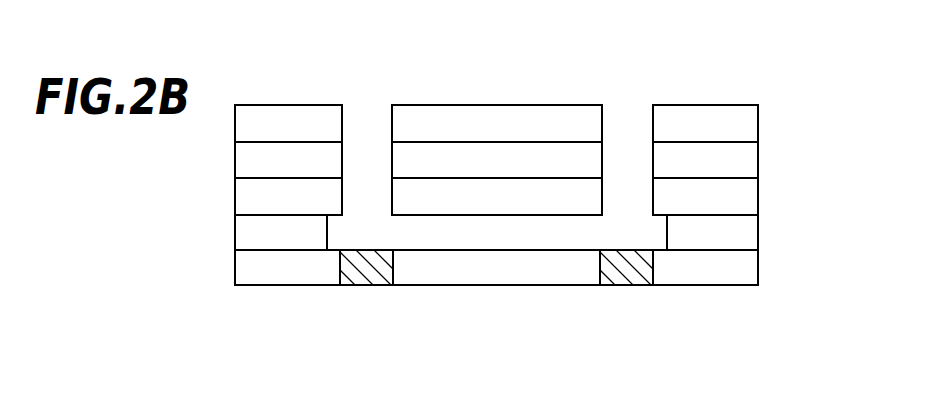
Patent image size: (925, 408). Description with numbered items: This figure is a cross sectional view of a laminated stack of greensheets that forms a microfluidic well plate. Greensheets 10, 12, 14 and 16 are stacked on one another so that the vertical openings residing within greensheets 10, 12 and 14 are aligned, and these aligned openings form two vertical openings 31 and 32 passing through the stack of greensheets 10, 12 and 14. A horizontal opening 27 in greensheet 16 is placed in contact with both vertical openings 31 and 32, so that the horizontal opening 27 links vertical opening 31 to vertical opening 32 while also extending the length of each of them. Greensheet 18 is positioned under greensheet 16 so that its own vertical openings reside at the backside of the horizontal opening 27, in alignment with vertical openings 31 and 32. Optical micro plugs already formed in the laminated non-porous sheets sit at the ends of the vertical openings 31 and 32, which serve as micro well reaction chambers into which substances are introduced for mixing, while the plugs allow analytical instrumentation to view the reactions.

The greensheet 10 is at (748, 124).
The greensheet 12 is at (748, 160).
The greensheet 14 is at (748, 197).
The greensheet 16 is at (748, 240).
The greensheet 18 is at (748, 275).
The horizontal opening 27 is at (497, 232).
The vertical opening 31 is at (370, 118).
The vertical opening 32 is at (632, 118).